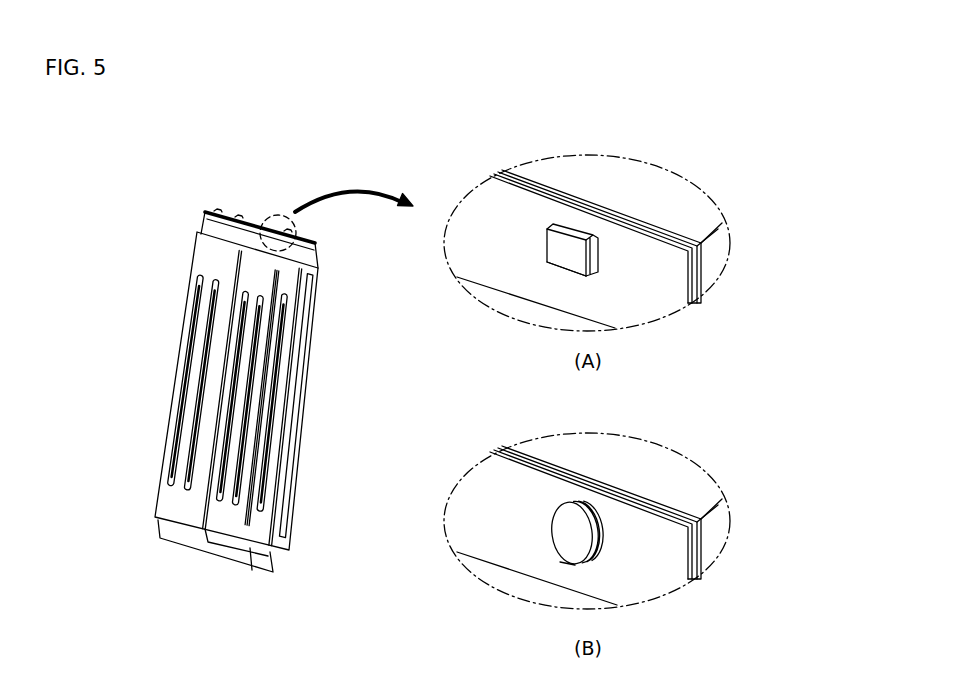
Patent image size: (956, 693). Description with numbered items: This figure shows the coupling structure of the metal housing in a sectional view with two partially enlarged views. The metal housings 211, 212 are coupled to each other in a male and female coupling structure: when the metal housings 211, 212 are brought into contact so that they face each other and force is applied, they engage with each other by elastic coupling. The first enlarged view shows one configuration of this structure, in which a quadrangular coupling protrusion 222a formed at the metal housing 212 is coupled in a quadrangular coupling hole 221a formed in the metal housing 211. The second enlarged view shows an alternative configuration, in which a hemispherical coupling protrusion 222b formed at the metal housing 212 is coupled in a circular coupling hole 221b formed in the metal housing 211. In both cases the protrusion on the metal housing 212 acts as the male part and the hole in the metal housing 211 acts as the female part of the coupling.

The metal housing 211 is at (178, 357).
The metal housing 212 is at (298, 398).
The quadrangular coupling hole 221a is at (572, 276).
The quadrangular coupling protrusion 222a is at (563, 240).
The circular coupling hole 221b is at (570, 563).
The hemispherical coupling protrusion 222b is at (568, 520).